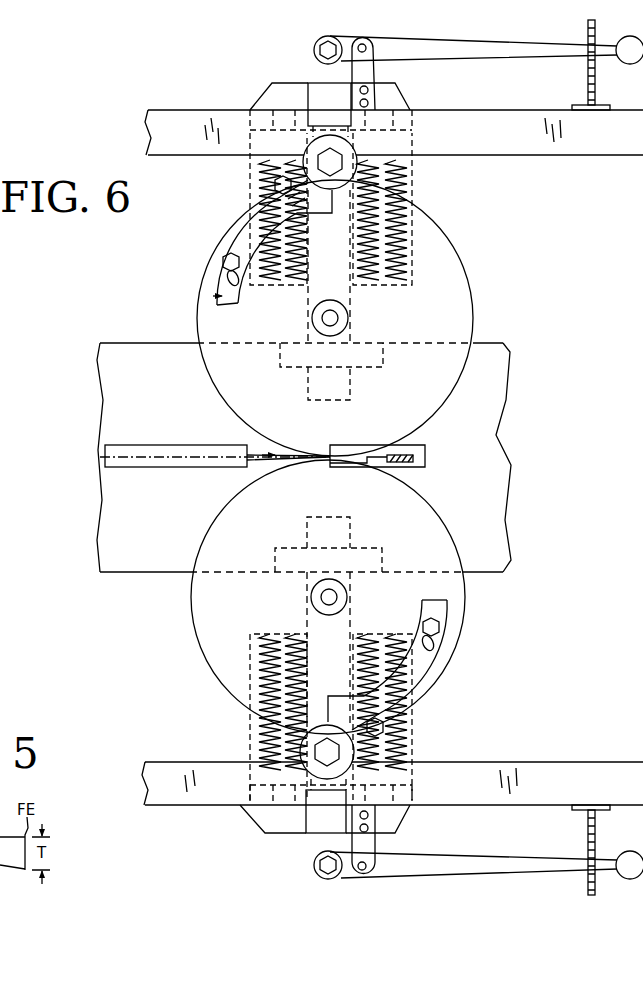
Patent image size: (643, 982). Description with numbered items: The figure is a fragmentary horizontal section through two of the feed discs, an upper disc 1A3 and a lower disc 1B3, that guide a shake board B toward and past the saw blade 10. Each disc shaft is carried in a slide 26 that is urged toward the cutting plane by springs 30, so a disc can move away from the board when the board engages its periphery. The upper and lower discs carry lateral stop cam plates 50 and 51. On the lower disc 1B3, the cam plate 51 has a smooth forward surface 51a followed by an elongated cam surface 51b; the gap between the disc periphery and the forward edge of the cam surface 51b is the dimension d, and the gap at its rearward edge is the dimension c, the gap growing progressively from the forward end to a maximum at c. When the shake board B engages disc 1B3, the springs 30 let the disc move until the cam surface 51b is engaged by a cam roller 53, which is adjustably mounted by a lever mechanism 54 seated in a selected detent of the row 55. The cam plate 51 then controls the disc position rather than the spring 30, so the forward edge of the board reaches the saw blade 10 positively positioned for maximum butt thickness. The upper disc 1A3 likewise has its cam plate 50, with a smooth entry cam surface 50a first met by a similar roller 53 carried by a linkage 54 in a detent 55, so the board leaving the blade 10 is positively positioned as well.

The upper disc 1A3 is at (470, 318).
The lower disc 1B3 is at (455, 625).
The saw blade 10 is at (405, 462).
The slide 26 is at (310, 381).
The spring 30 is at (397, 186).
The cam plate 50 is at (237, 262).
The smooth entry cam surface 50a is at (147, 457).
The cam plate 51 is at (448, 600).
The smooth forward surface 51a is at (347, 718).
The elongated cam surface 51b is at (432, 672).
The cam roller 53 is at (397, 170).
The lever mechanism 54 is at (532, 46).
The row of detents 55 is at (588, 76).
The shake board B is at (140, 442).
The gap dimension at rearward edge c is at (198, 293).
The gap dimension at forward edge d is at (288, 199).